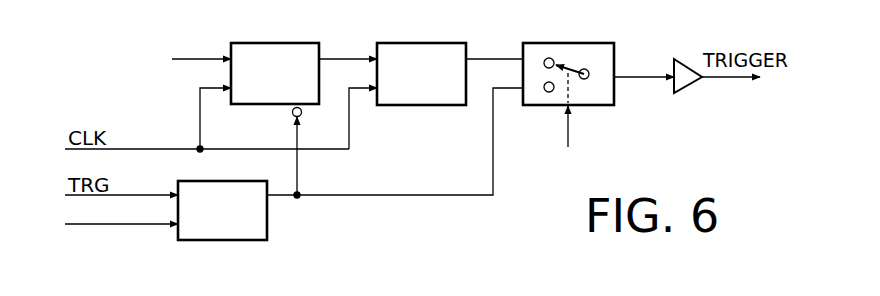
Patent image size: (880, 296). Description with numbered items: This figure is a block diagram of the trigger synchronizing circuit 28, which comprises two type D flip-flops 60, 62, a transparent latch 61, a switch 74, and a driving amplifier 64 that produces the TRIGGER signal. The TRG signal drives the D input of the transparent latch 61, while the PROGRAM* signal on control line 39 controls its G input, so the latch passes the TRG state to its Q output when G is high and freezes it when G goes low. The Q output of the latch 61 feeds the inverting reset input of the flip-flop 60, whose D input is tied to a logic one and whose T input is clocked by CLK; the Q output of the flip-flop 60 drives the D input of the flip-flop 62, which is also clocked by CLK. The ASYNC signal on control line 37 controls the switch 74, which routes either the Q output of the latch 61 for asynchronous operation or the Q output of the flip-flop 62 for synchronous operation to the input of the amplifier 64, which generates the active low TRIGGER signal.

The type D flip-flop 60 is at (288, 42).
The type D flip-flop 62 is at (432, 42).
The switch 74 is at (578, 42).
The driving amplifier 64 is at (681, 89).
The control line 37 is at (570, 127).
The trigger synchronizing circuit 28 is at (464, 214).
The transparent latch 61 is at (270, 202).
The control line 39 is at (137, 228).